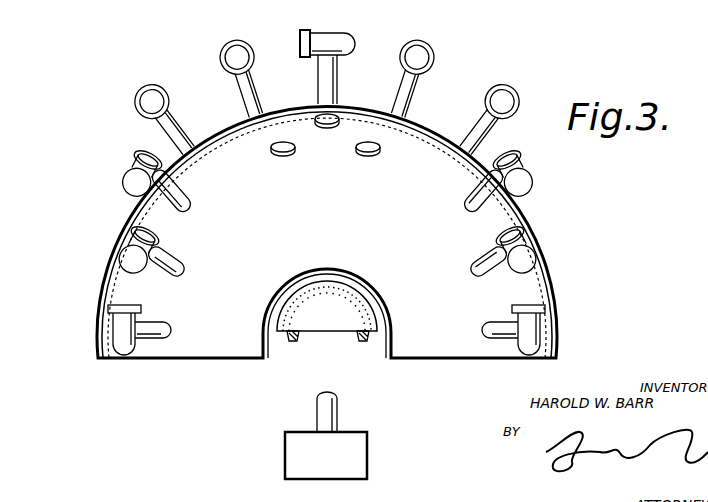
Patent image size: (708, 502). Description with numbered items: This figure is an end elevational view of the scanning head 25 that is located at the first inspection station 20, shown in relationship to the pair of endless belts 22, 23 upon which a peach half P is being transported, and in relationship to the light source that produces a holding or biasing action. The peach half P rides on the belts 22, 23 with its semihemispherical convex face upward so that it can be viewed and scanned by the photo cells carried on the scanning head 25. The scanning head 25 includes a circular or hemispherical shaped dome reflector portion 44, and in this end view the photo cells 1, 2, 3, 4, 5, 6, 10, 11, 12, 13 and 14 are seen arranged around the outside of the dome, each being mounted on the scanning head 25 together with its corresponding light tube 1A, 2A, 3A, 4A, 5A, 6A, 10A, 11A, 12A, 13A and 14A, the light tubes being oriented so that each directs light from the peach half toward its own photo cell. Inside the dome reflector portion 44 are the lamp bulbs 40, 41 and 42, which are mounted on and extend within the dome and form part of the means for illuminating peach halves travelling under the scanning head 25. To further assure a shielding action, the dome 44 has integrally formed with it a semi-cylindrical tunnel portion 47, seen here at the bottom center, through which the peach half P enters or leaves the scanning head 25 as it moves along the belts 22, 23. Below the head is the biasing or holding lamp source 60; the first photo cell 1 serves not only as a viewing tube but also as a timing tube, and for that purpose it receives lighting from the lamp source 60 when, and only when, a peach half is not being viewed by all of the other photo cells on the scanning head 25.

The photo cell 1 is at (345, 42).
The light tube 1A is at (333, 80).
The photo cell 2 is at (420, 57).
The light tube 2A is at (410, 96).
The photo cell 3 is at (505, 102).
The light tube 3A is at (492, 128).
The photo cell 4 is at (520, 180).
The light tube 4A is at (480, 196).
The photo cell 5 is at (527, 262).
The light tube 5A is at (490, 258).
The photo cell 6 is at (532, 333).
The light tube 6A is at (490, 338).
The photo cell 10 is at (244, 52).
The light tube 10A is at (262, 84).
The photo cell 11 is at (153, 100).
The light tube 11A is at (172, 118).
The photo cell 12 is at (130, 178).
The light tube 12A is at (175, 196).
The photo cell 13 is at (122, 257).
The light tube 13A is at (162, 256).
The photo cell 14 is at (118, 336).
The light tube 14A is at (160, 326).
The inspection station 20 is at (484, 65).
The endless belt 22 is at (291, 342).
The endless belt 23 is at (362, 342).
The scanning head 25 is at (562, 307).
The lamp bulb 40 is at (340, 121).
The lamp bulb 41 is at (283, 153).
The lamp bulb 42 is at (368, 154).
The dome reflector portion 44 is at (540, 278).
The semi-cylindrical tunnel portion 47 is at (381, 293).
The peach half P is at (340, 290).
The biasing or holding lamp source 60 is at (362, 455).